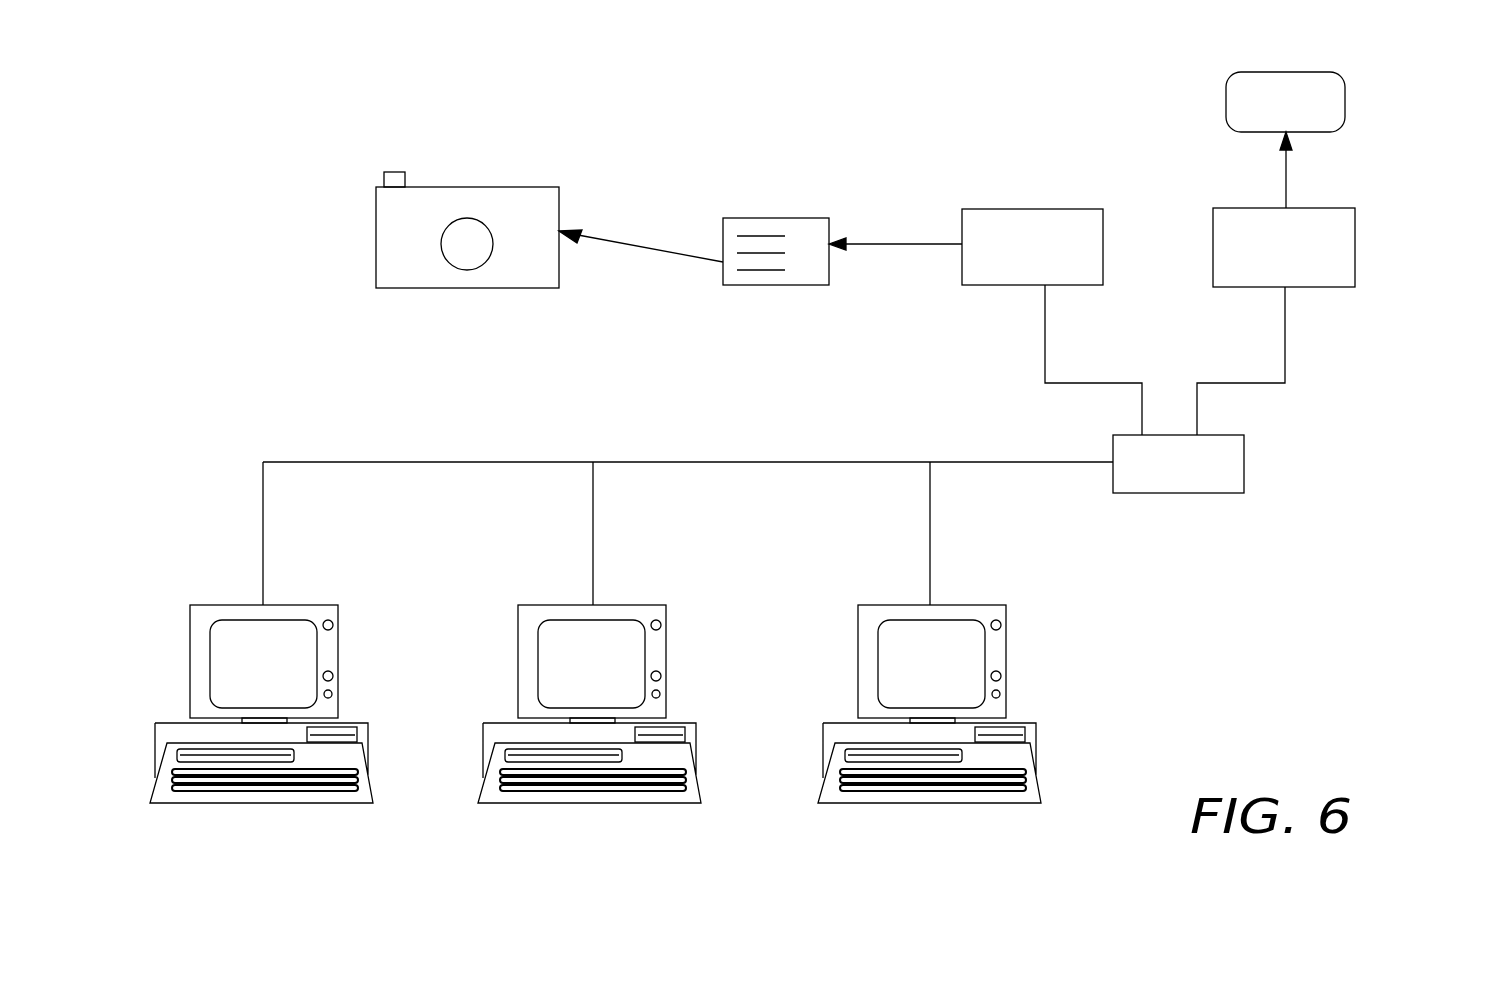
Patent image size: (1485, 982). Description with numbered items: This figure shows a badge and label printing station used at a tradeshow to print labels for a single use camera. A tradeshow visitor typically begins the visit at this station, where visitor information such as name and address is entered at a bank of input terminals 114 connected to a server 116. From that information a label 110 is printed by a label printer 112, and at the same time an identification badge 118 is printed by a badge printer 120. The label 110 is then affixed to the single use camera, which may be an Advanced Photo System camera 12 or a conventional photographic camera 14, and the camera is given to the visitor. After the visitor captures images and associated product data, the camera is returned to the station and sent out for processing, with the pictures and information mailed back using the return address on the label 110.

The Advanced Photo System camera 12 is at (473, 199).
The conventional photographic camera 14 is at (441, 187).
The label 110 is at (765, 218).
The label printer 112 is at (1012, 209).
The bank of input terminals 114 is at (555, 440).
The server 116 is at (1244, 471).
The identification badge 118 is at (1345, 102).
The badge printer 120 is at (1355, 255).